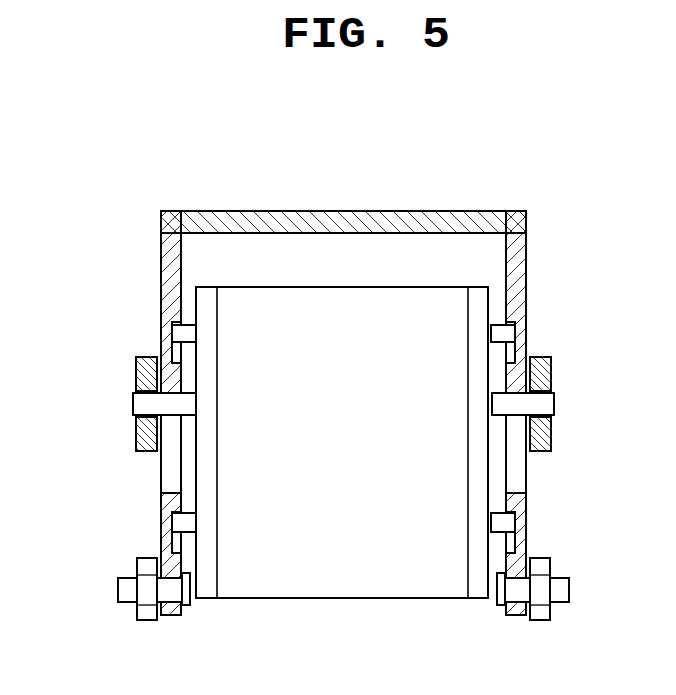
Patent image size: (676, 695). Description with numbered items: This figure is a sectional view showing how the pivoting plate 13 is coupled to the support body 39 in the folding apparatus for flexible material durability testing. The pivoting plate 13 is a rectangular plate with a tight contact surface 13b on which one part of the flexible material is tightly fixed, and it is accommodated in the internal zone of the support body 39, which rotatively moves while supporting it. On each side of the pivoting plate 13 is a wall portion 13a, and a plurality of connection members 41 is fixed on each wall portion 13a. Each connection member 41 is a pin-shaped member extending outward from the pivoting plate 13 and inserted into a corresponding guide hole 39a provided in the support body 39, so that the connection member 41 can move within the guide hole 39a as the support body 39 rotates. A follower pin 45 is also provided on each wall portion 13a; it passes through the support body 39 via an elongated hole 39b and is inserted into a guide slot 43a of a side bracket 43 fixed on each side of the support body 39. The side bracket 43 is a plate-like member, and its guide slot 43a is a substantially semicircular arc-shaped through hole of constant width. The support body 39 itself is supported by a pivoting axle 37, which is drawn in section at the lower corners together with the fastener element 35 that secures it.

The pivoting plate 13 is at (305, 280).
The wall portion 13a is at (206, 301).
The tight contact surface 13b is at (355, 297).
The nut 35 is at (143, 595).
The pivoting axle 37 is at (127, 588).
The support body 39 is at (458, 222).
The guide hole 39a is at (178, 353).
The elongated hole 39b is at (167, 479).
The connection member 41 is at (183, 333).
The side bracket 43 is at (142, 437).
The guide slot 43a is at (142, 389).
The follower pin 45 is at (140, 402).